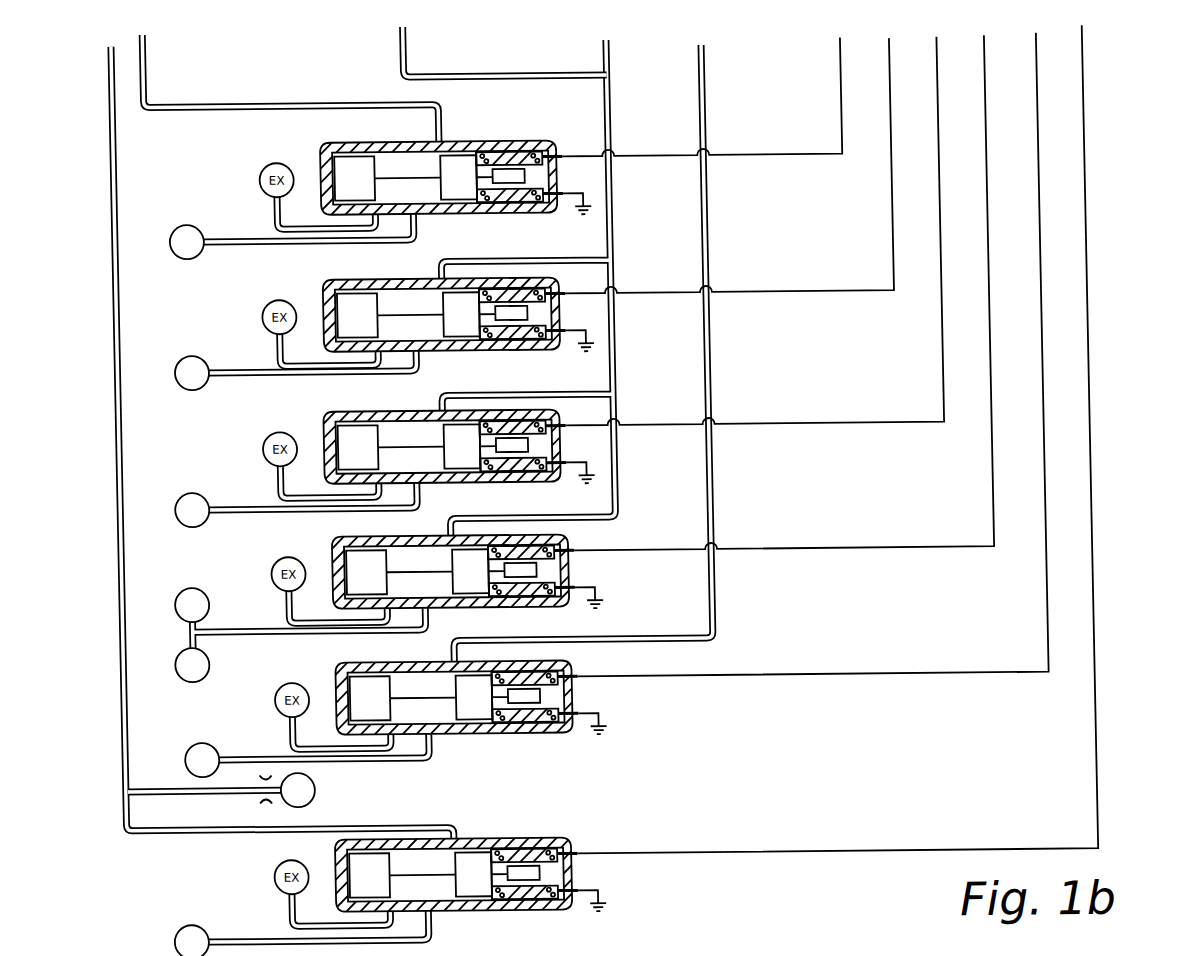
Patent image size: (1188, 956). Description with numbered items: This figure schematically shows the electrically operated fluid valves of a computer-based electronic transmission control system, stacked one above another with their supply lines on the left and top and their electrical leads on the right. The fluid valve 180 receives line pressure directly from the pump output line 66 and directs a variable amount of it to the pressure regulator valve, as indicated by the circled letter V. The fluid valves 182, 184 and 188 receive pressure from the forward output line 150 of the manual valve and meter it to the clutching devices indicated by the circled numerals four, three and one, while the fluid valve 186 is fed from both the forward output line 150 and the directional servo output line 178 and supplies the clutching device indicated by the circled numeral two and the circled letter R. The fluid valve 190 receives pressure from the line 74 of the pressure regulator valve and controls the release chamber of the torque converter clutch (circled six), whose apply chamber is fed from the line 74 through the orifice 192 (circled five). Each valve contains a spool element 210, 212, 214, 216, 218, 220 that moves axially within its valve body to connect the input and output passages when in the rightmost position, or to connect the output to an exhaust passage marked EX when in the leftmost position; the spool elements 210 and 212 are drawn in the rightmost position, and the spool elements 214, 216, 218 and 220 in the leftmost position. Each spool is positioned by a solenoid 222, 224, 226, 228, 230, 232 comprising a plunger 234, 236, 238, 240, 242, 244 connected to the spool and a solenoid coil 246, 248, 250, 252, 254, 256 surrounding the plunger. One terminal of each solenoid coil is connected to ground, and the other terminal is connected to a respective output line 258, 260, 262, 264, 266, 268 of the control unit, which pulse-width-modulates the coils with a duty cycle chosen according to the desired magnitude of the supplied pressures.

The pump output line 66 is at (149, 70).
The line 74 is at (101, 298).
The forward output line 150 is at (405, 56).
The directional servo output line 178 is at (606, 69).
The fluid valve 180 is at (319, 160).
The fluid valve 182 is at (321, 290).
The fluid valve 184 is at (318, 430).
The fluid valve 186 is at (322, 548).
The fluid valve 188 is at (322, 676).
The fluid valve 190 is at (336, 846).
The orifice 192 is at (244, 803).
The spool element 210 is at (450, 164).
The spool element 212 is at (450, 343).
The spool element 214 is at (447, 476).
The spool element 216 is at (445, 600).
The spool element 218 is at (442, 730).
The spool element 220 is at (462, 917).
The solenoid 222 is at (546, 184).
The solenoid 224 is at (547, 318).
The solenoid 226 is at (551, 448).
The solenoid 228 is at (552, 573).
The solenoid 230 is at (528, 693).
The solenoid 232 is at (560, 886).
The plunger 234 is at (498, 185).
The plunger 236 is at (499, 313).
The plunger 238 is at (492, 445).
The plunger 240 is at (495, 570).
The plunger 242 is at (495, 700).
The plunger 244 is at (508, 862).
The solenoid coil 246 is at (524, 156).
The solenoid coil 248 is at (523, 338).
The solenoid coil 250 is at (528, 470).
The solenoid coil 252 is at (535, 598).
The solenoid coil 254 is at (518, 723).
The solenoid coil 256 is at (538, 856).
The output line 258 is at (797, 163).
The output line 260 is at (804, 300).
The output line 262 is at (857, 431).
The output line 264 is at (817, 556).
The output line 266 is at (884, 684).
The output line 268 is at (838, 856).